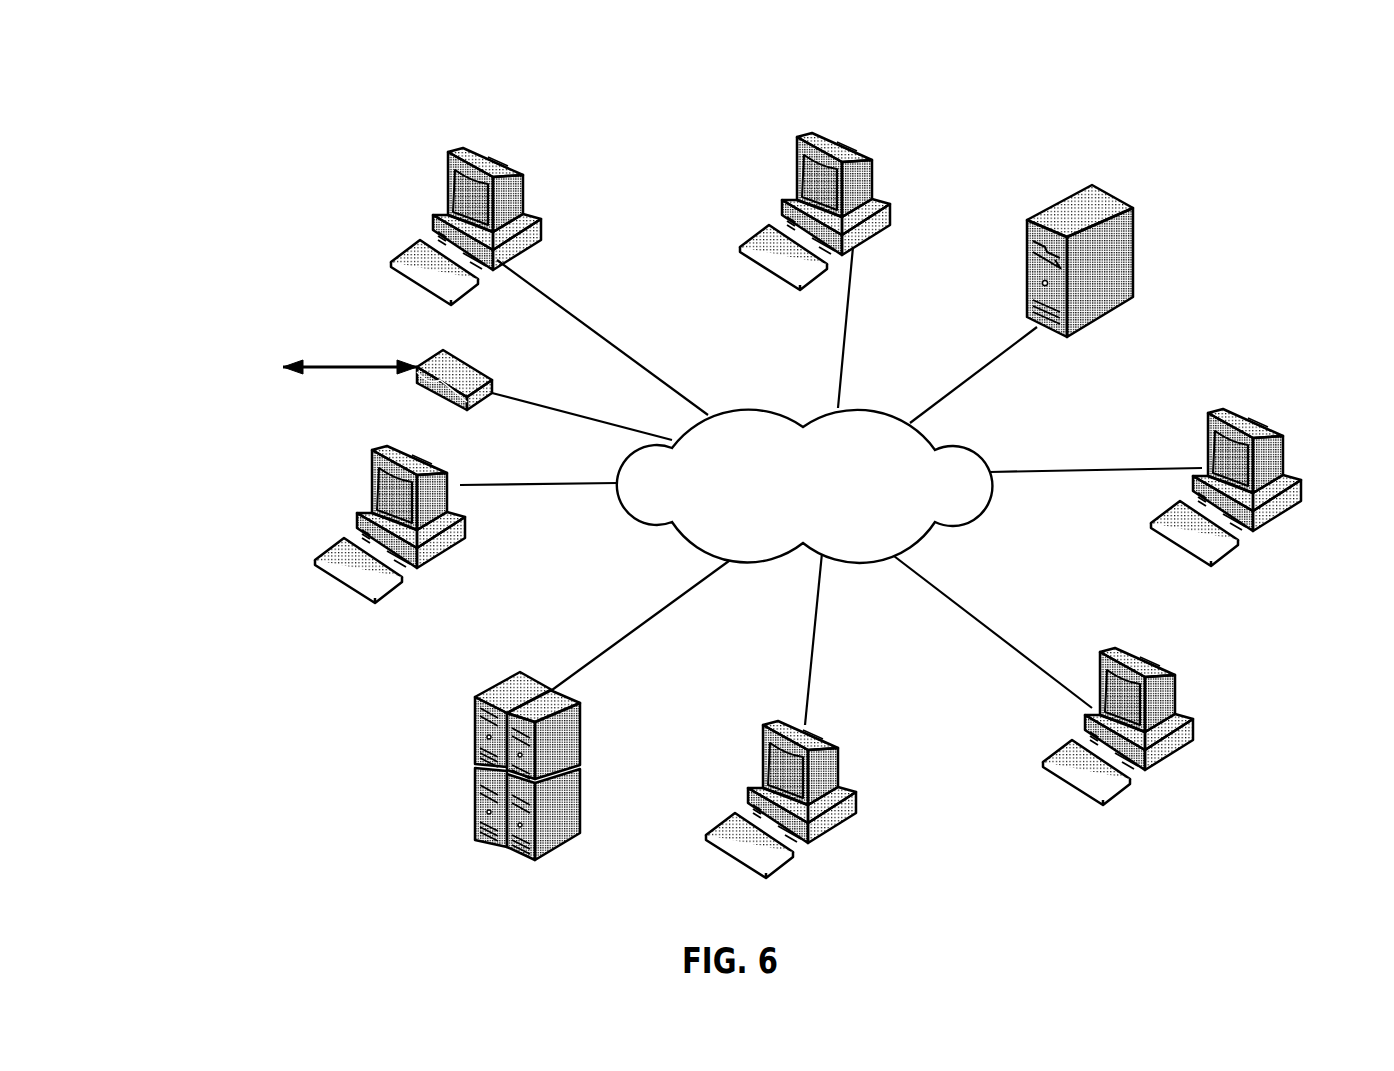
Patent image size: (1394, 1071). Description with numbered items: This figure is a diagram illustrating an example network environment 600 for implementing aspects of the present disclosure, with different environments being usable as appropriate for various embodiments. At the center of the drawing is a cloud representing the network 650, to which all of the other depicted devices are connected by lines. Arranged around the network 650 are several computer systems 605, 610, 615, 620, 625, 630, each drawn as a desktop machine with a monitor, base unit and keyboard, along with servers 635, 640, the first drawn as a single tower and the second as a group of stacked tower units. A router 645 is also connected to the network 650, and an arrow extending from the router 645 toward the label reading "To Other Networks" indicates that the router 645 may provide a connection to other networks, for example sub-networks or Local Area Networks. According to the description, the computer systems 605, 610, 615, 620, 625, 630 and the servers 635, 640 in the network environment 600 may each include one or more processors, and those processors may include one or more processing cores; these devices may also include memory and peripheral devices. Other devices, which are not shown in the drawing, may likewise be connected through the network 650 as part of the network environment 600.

The network environment 600 is at (111, 92).
The computer system 605 is at (442, 177).
The computer system 610 is at (790, 153).
The computer system 615 is at (1290, 440).
The computer system 620 is at (1180, 682).
The computer system 625 is at (843, 757).
The computer system 630 is at (368, 470).
The server 635 is at (1137, 228).
The server 640 is at (473, 737).
The router 645 is at (433, 353).
The network 650 is at (787, 505).